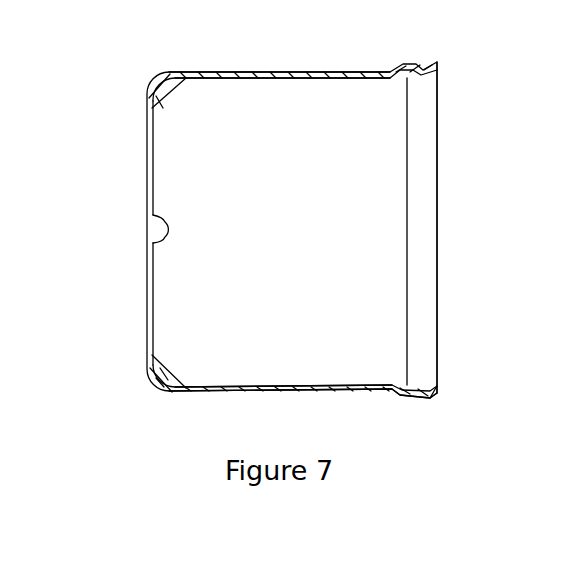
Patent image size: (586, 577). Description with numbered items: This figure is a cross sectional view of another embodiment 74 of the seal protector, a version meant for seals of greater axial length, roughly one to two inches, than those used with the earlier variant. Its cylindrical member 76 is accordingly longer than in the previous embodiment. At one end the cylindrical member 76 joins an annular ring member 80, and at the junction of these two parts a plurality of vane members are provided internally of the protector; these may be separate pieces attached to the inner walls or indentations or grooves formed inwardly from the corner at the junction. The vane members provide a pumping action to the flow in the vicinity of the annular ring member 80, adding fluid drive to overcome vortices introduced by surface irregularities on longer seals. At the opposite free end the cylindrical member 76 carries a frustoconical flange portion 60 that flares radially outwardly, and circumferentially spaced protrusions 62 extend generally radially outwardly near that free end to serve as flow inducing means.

The protector embodiment 74 is at (138, 286).
The cylindrical member 76 is at (302, 72).
The annular ring member 80 is at (150, 346).
The frustoconical flange portion 60 is at (432, 386).
The protrusions 62 is at (402, 398).